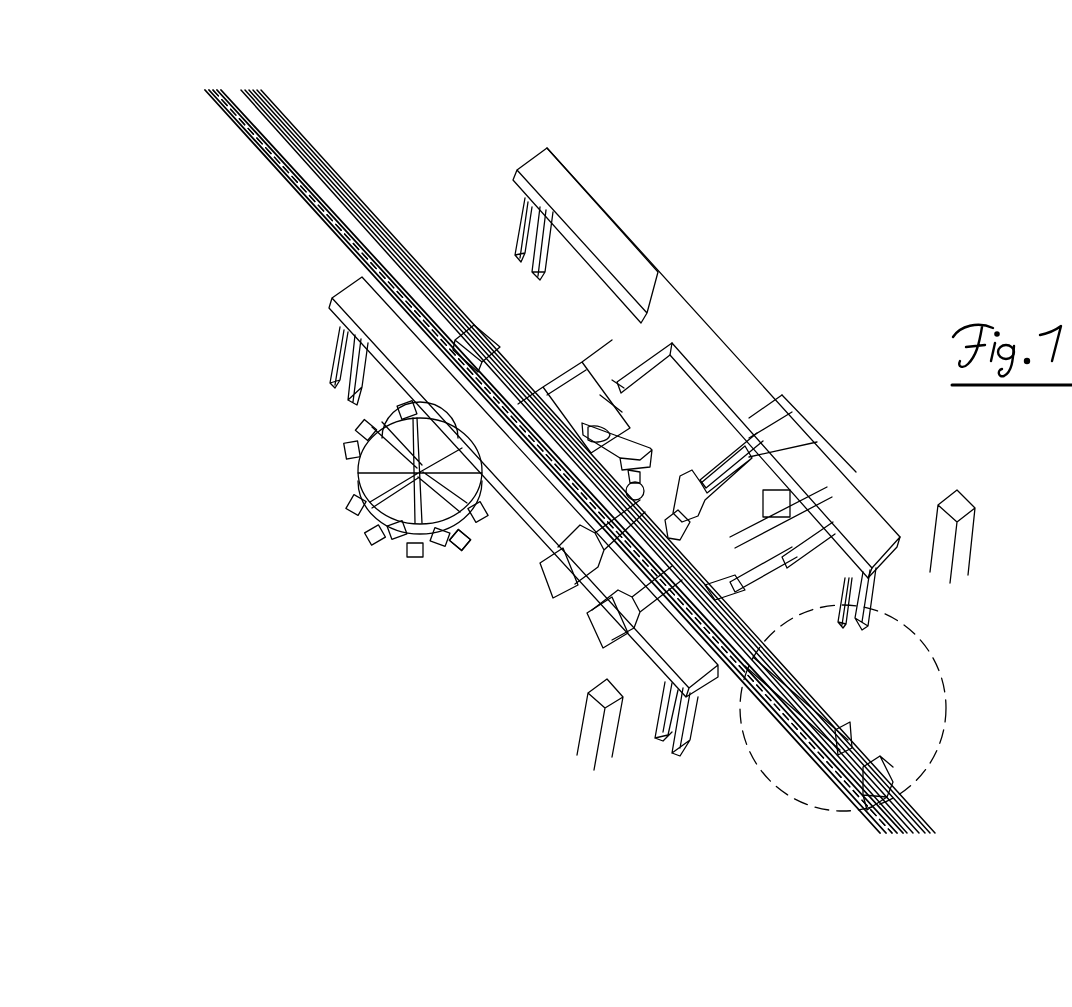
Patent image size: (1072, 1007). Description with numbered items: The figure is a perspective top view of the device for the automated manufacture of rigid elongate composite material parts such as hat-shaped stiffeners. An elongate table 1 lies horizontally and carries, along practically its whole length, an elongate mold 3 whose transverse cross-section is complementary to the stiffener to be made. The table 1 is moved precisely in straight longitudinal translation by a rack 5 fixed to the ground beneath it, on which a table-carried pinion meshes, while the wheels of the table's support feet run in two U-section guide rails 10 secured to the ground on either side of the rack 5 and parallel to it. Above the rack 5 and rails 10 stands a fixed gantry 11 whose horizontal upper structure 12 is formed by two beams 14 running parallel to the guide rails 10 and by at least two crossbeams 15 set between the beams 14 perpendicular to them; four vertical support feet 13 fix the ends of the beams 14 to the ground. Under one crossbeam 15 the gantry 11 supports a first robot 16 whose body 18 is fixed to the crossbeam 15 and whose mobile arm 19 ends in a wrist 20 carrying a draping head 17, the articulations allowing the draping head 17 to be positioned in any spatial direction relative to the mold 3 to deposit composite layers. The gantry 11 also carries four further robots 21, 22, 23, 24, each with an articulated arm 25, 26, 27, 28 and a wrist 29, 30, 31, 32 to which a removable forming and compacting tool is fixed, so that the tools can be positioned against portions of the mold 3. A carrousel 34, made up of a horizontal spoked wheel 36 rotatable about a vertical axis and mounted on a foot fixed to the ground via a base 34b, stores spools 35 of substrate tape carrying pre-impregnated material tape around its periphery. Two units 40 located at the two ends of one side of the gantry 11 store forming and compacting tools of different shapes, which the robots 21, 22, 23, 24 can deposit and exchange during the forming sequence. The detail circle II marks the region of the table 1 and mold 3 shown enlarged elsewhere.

The elongate table 1 is at (865, 767).
The elongate mold 3 is at (824, 715).
The rack 5 is at (262, 147).
The guide rails 10 is at (214, 110).
The fixed gantry 11 is at (723, 350).
The horizontal upper structure 12 is at (722, 352).
The vertical support feet 13 is at (520, 228).
The beams 14 is at (585, 178).
The crossbeams 15 is at (613, 342).
The first robot 16 is at (620, 385).
The draping head 17 is at (649, 502).
The body 18 is at (555, 372).
The mobile arm 19 is at (640, 445).
The end wrist 20 is at (622, 413).
The robot 21 is at (775, 417).
The robot 22 is at (557, 574).
The robot 23 is at (817, 464).
The robot 24 is at (602, 621).
The articulated arm 25 is at (722, 478).
The articulated arm 26 is at (595, 532).
The articulated arm 27 is at (763, 525).
The articulated arm 28 is at (685, 560).
The wrist 29 is at (718, 480).
The wrist 30 is at (600, 592).
The wrist 31 is at (790, 537).
The wrist 32 is at (735, 597).
The carrousel 34 is at (374, 519).
The base 34b is at (460, 548).
The spools 35 is at (352, 500).
The horizontal wheel 36 is at (362, 520).
The units 40 is at (972, 540).
The detail view circle II is at (767, 781).